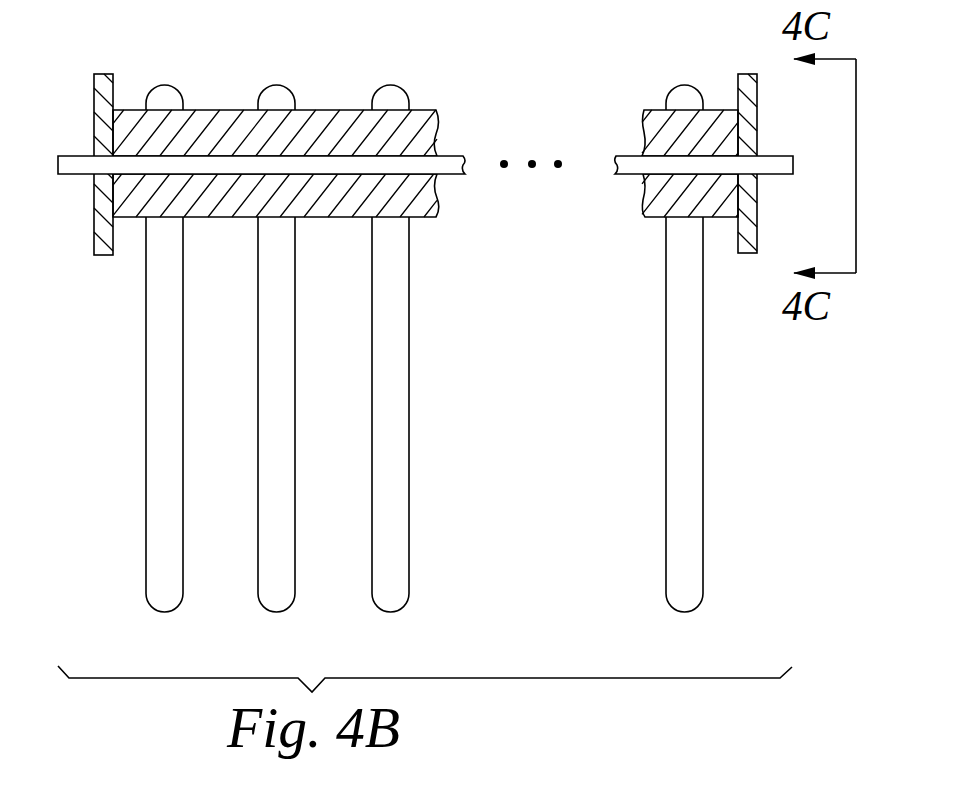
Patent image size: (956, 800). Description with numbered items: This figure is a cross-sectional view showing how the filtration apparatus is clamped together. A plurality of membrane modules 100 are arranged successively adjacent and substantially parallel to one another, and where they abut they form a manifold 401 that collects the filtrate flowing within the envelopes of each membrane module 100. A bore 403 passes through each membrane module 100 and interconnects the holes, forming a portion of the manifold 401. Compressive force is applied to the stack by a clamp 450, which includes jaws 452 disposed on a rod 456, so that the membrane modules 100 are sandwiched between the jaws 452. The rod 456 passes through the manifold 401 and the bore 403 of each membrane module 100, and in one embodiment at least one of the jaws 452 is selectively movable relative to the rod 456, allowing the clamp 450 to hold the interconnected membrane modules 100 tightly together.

The membrane module 100 is at (186, 71).
The manifold 401 is at (319, 110).
The bore 403 is at (165, 130).
The clamp 450 is at (114, 64).
The jaws 452 is at (105, 256).
The rod 456 is at (80, 155).